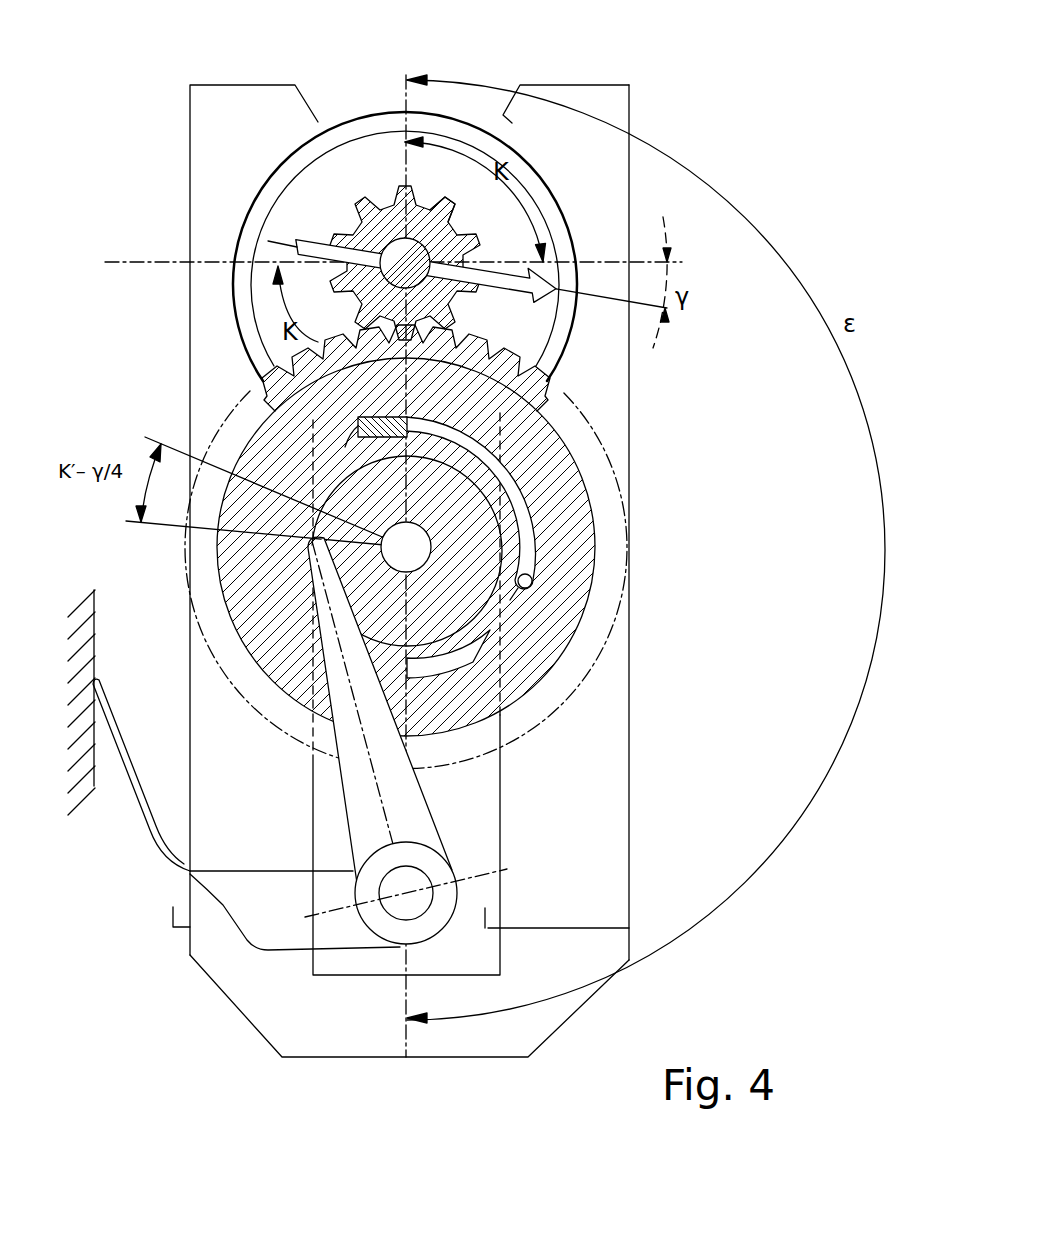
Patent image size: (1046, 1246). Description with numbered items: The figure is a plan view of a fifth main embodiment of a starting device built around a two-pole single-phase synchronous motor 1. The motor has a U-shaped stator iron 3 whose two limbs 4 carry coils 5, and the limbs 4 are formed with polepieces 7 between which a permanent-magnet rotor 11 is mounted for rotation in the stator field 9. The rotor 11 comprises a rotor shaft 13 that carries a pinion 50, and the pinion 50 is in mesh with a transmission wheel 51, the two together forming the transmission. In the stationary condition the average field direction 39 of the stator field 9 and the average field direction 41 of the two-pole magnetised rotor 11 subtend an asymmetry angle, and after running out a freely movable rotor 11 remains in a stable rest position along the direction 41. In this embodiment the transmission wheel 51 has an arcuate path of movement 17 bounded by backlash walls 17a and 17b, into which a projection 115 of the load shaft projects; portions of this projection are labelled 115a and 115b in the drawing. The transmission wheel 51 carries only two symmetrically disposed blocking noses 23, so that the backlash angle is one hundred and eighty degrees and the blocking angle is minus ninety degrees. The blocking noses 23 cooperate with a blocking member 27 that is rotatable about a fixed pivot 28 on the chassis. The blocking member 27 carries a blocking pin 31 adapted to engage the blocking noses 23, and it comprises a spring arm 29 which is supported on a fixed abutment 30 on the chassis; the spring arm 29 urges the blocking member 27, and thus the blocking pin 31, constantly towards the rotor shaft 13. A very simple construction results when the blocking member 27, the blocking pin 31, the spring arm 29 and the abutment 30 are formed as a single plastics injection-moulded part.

The single-phase synchronous motor 1 is at (206, 1017).
The stator iron 3 is at (522, 1042).
The limbs 4 is at (603, 705).
The coils 5 is at (171, 923).
The polepieces 7 is at (612, 188).
The stator field 9 is at (285, 157).
The permanent-magnet rotor 11 is at (333, 145).
The rotor shaft 13 is at (395, 240).
The arcuate path of movement 17 is at (530, 517).
The backlash wall 17a is at (500, 653).
The backlash wall 17b is at (396, 387).
The blocking noses 23 is at (522, 588).
The blocking member 27 is at (362, 923).
The fixed pivot 28 is at (415, 884).
The spring arm 29 is at (137, 792).
The fixed abutment 30 is at (93, 631).
The blocking pin 31 is at (322, 709).
The average field direction of the stator field 39 is at (215, 258).
The average field direction of the rotor 41 is at (268, 241).
The pinion 50 is at (447, 210).
The transmission wheel 51 is at (572, 522).
The projection of the load shaft 115 is at (346, 451).
The arcuate slot 115a is at (485, 436).
The pawl nose 115b is at (372, 437).